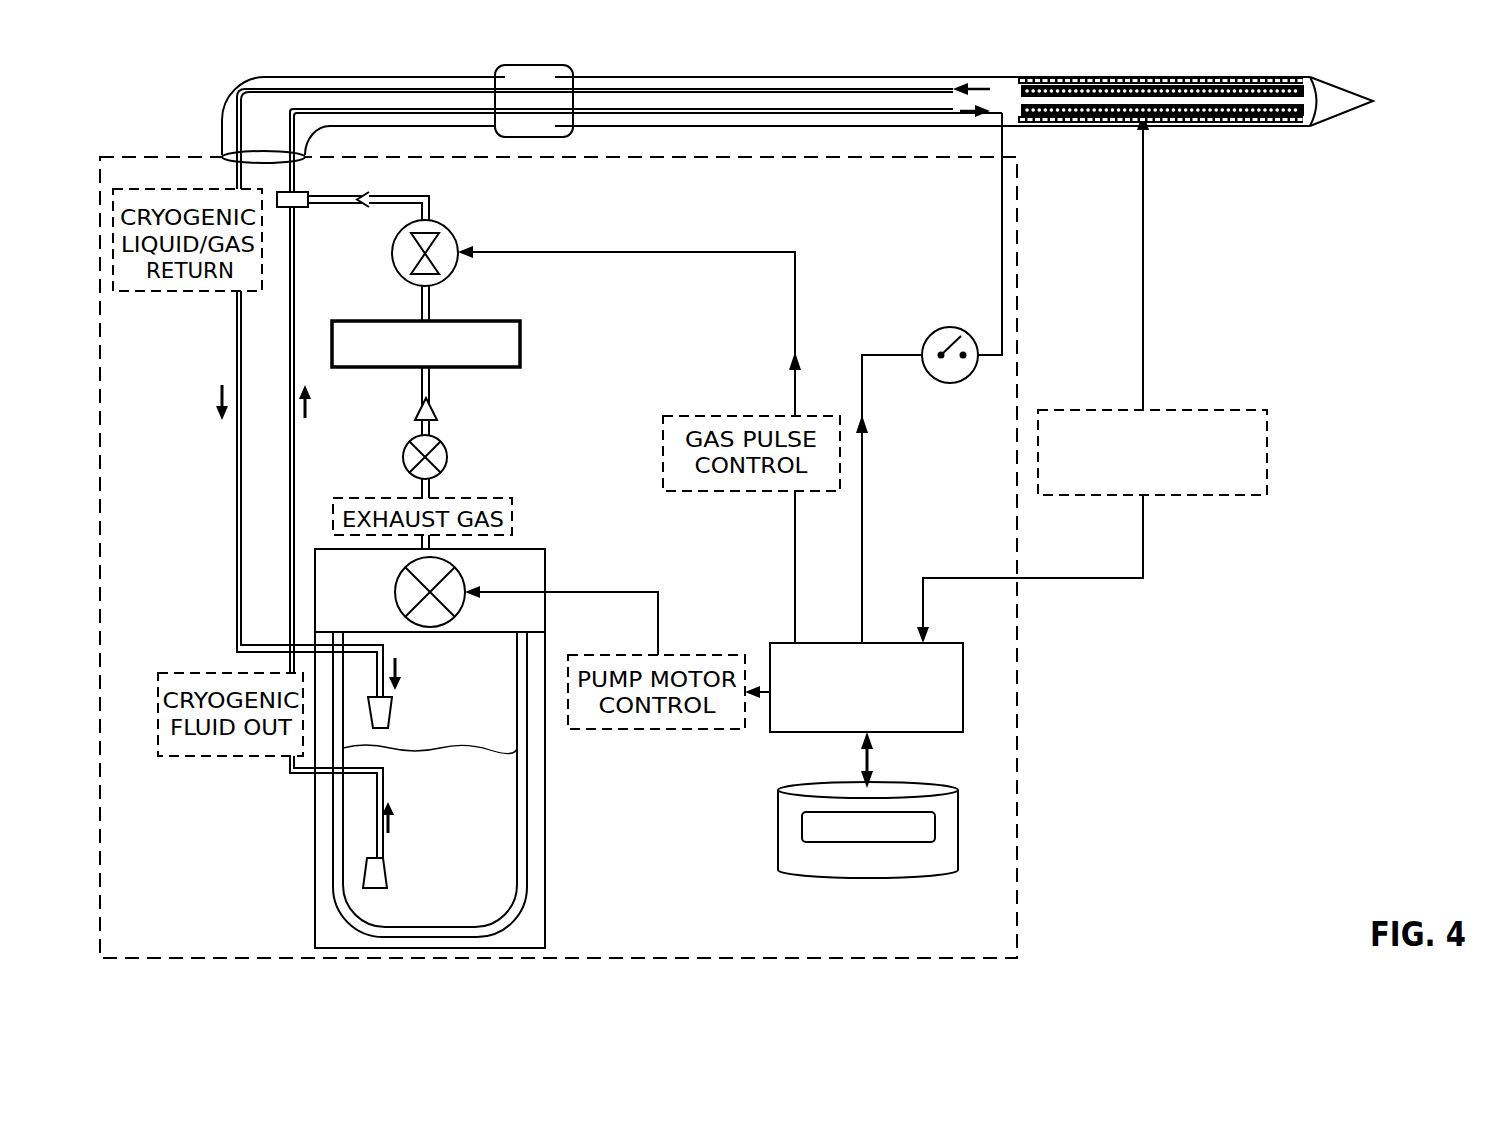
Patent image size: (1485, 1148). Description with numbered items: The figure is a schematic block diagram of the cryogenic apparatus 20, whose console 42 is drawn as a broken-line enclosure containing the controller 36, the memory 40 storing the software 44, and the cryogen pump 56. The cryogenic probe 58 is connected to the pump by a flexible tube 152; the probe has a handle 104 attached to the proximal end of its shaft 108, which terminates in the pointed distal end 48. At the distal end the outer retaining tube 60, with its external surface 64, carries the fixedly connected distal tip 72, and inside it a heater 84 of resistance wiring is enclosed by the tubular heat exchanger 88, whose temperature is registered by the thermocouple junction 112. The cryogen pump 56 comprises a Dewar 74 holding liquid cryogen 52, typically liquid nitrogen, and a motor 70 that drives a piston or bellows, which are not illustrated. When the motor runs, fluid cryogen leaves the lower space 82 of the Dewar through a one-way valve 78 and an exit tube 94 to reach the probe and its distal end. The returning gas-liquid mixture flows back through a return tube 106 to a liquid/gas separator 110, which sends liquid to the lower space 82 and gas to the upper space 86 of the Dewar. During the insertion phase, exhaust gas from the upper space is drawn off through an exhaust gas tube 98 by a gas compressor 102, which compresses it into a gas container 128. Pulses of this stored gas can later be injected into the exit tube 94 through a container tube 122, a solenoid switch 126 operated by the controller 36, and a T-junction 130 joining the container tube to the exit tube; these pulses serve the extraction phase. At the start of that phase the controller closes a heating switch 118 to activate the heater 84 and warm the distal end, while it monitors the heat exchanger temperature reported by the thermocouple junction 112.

The apparatus 20 is at (1290, 670).
The controller 36 is at (963, 680).
The memory 40 is at (958, 850).
The console 42 is at (1017, 838).
The software 44 is at (802, 830).
The distal end 48 is at (1293, 254).
The liquid cryogen 52 is at (498, 883).
The cryogen pump 56 is at (545, 805).
The cryogenic probe 58 is at (783, 128).
The retaining tube 60 is at (1230, 128).
The external surface 64 is at (1272, 128).
The motor 70 is at (398, 577).
The distal tip 72 is at (1345, 112).
The Dewar 74 is at (333, 820).
The one-way valve 78 is at (363, 882).
The lower space 82 is at (430, 813).
The heater 84 is at (1183, 128).
The upper space 86 is at (423, 677).
The heat exchanger 88 is at (1070, 128).
The exit tube 94 is at (295, 432).
The exhaust gas tube 98 is at (432, 487).
The gas compressor 102 is at (447, 457).
The handle 104 is at (497, 70).
The return tube 106 is at (237, 432).
The shaft 108 is at (812, 76).
The liquid/gas separator 110 is at (393, 712).
The thermocouple junction 112 is at (1140, 128).
The heating switch 118 is at (935, 332).
The container tube 122 is at (430, 205).
The solenoid switch 126 is at (455, 235).
The gas container 128 is at (520, 340).
The T-junction 130 is at (306, 208).
The flexible tube 152 is at (367, 77).